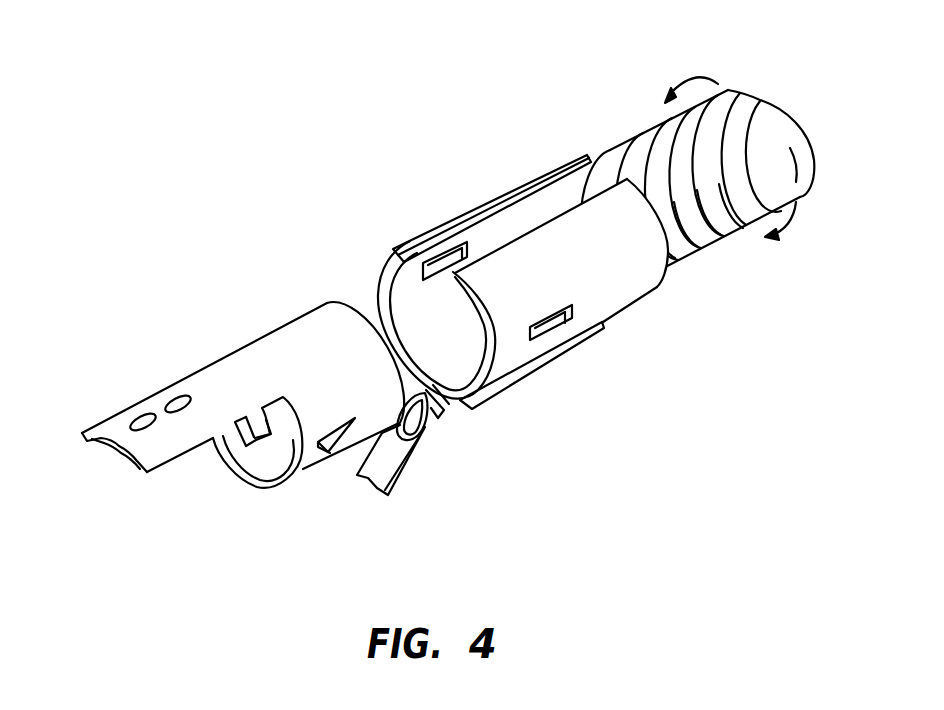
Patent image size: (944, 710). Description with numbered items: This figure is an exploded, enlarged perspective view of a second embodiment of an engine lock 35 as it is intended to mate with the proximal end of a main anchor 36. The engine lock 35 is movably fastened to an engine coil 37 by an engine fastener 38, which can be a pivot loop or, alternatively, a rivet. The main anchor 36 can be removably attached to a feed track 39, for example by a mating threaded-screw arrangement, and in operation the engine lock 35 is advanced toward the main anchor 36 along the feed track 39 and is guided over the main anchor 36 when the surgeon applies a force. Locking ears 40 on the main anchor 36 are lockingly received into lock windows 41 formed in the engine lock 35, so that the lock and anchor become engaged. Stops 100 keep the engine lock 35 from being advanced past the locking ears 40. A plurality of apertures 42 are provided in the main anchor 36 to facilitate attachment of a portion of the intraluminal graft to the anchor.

The engine lock 35 is at (500, 196).
The main anchor 36 is at (258, 337).
The engine coil 37 is at (400, 484).
The engine fastener 38 is at (440, 420).
The feed track 39 is at (778, 112).
The locking ears 40 is at (339, 444).
The lock windows 41 is at (563, 327).
The apertures 42 is at (173, 399).
The stops 100 is at (255, 455).